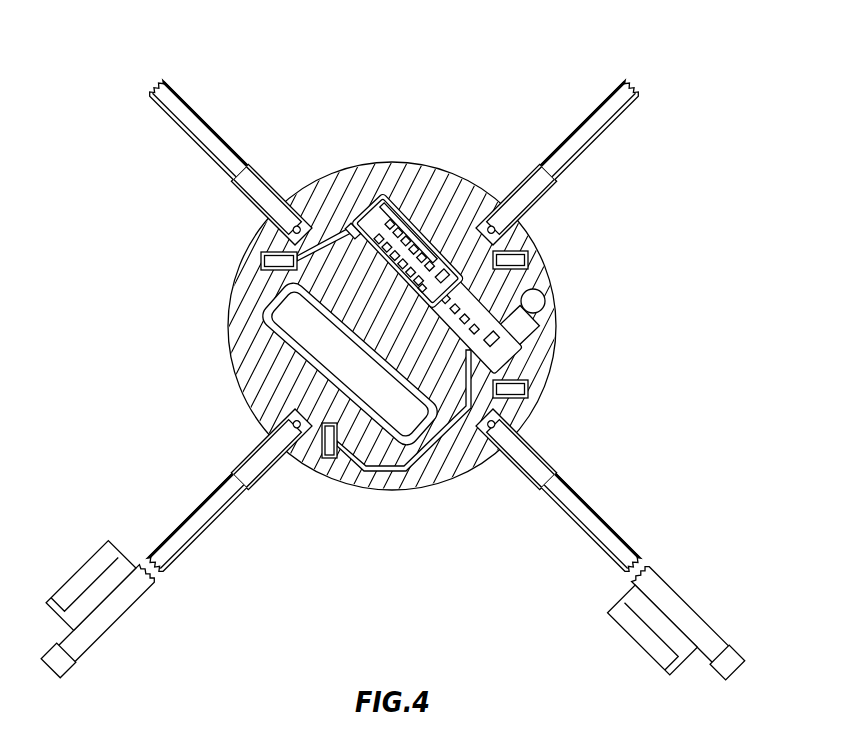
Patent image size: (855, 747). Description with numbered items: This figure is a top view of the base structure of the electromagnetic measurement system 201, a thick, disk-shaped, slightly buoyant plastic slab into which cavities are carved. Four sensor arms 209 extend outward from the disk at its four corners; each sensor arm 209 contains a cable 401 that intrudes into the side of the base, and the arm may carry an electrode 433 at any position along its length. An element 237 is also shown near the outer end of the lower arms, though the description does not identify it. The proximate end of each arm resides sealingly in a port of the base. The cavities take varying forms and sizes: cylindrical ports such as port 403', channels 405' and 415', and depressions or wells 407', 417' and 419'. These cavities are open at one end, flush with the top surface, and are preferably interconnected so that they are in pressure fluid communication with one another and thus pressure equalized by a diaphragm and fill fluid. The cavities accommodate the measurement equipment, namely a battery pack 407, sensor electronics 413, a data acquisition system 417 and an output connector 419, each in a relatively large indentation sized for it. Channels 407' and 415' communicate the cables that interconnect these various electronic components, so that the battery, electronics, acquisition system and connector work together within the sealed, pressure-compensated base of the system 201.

The measurement system 201 is at (730, 104).
The sensor arm 209 is at (197, 95).
The switch block 237 is at (88, 557).
The cable 401 is at (292, 205).
The port 403' is at (462, 253).
The channel 405' is at (271, 474).
The battery pack 407 is at (374, 421).
The channel 407' is at (404, 469).
The sensor electronics 413 is at (326, 460).
The channel 415' is at (366, 179).
The data acquisition system 417 is at (427, 180).
The well 417' is at (499, 228).
The output connector 419 is at (602, 277).
The well 419' is at (594, 308).
The electrode 433 is at (131, 603).